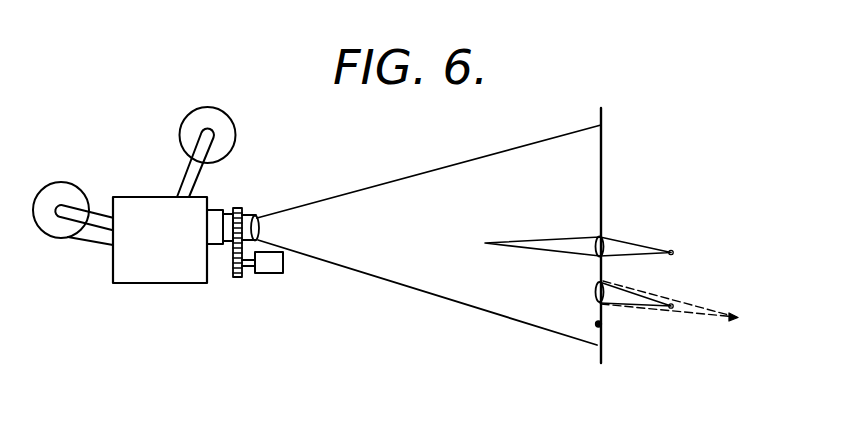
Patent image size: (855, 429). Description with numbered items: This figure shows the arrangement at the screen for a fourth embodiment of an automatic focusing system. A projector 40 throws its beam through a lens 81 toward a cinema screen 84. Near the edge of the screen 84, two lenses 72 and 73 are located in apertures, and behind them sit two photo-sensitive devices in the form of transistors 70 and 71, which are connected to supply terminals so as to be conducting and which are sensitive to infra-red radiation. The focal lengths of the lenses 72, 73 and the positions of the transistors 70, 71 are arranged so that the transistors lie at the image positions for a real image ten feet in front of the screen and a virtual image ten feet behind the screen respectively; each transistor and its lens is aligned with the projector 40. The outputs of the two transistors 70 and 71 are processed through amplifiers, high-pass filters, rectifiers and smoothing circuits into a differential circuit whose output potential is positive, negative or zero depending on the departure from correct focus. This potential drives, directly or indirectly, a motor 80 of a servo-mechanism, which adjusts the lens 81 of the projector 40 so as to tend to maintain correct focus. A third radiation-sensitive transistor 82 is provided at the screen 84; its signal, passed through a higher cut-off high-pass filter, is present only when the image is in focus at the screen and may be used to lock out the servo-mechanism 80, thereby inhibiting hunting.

The projector 40 is at (142, 272).
The lens 81 is at (259, 219).
The motor 80 is at (271, 262).
The cinema screen 84 is at (603, 159).
The lens 72 is at (594, 240).
The transistor 70 is at (672, 250).
The lens 73 is at (596, 288).
The transistor 71 is at (671, 308).
The radiation-sensitive transistor 82 is at (598, 326).